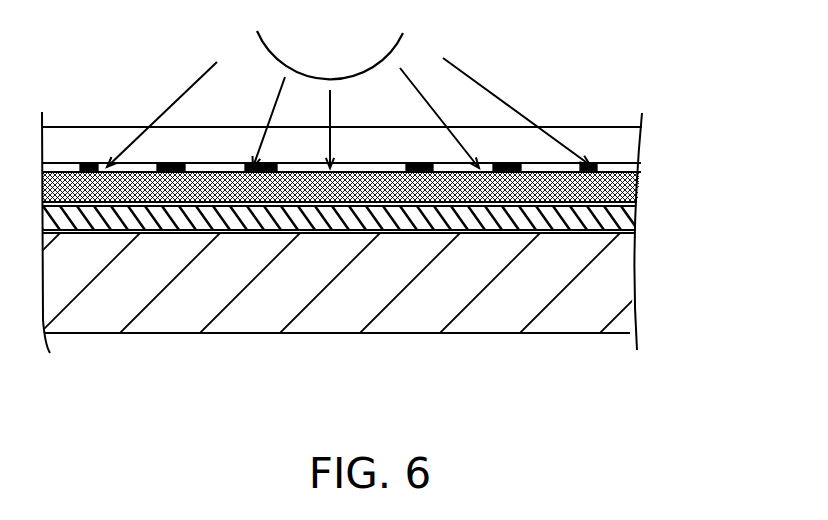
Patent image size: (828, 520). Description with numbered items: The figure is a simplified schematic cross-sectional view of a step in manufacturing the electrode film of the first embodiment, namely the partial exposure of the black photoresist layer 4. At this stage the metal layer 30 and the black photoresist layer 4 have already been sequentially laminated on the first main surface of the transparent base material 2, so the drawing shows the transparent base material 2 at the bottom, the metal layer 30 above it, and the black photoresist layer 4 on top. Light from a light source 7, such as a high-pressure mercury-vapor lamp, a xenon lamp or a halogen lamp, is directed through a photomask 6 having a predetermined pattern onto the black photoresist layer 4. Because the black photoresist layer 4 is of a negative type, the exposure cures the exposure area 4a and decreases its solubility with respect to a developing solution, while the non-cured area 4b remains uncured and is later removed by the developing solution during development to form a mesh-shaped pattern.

The transparent base material 2 is at (612, 280).
The black photoresist layer 4 is at (363, 279).
The exposure area 4a is at (347, 180).
The non-cured area 4b is at (417, 192).
The photomask 6 is at (92, 127).
The light source 7 is at (392, 43).
The metal layer 30 is at (625, 217).